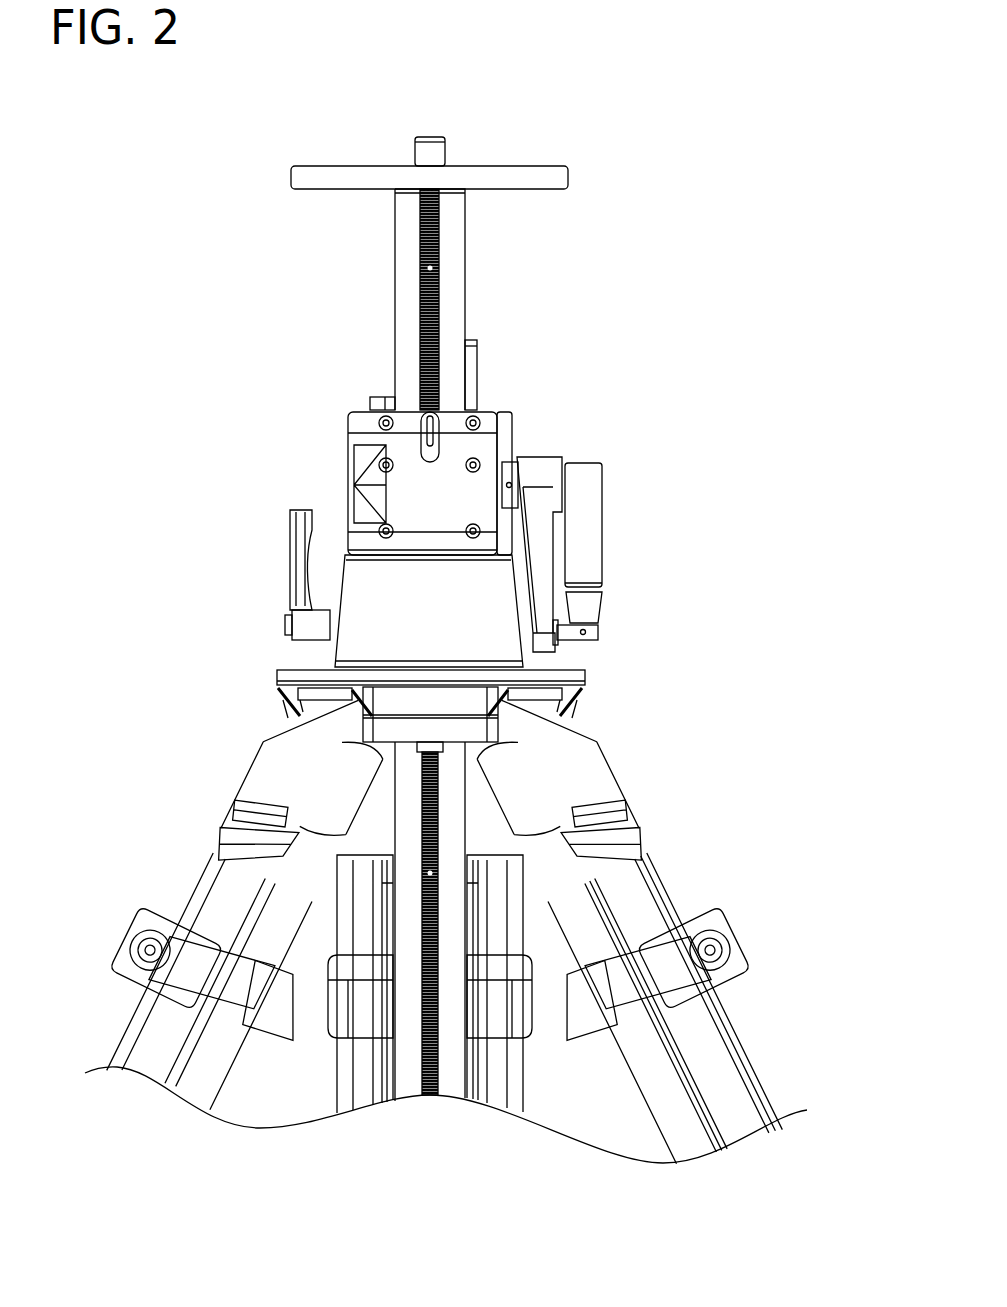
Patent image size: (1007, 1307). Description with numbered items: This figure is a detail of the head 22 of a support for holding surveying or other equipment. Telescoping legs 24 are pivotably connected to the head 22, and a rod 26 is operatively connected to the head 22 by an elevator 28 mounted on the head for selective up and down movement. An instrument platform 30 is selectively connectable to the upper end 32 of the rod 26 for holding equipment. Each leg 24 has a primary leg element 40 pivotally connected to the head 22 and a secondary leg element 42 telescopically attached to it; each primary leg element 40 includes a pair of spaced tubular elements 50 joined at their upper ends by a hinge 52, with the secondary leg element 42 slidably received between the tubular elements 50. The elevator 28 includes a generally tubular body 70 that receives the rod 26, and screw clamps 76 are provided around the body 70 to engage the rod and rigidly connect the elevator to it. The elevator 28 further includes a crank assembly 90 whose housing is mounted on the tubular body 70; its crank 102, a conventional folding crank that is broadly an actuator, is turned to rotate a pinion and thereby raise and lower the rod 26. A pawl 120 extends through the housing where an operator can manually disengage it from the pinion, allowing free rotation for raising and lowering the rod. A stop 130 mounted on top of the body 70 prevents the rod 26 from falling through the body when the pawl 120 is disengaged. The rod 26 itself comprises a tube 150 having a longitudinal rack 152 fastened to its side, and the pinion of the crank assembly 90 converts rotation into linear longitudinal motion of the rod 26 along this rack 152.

The head 22 is at (598, 683).
The telescoping legs 24 is at (452, 958).
The rod 26 is at (470, 283).
The elevator 28 is at (517, 430).
The instrument platform 30 is at (542, 158).
The upper end 32 is at (378, 198).
The primary leg element 40 is at (233, 1076).
The secondary leg element 42 is at (120, 1046).
The tubular elements 50 is at (205, 876).
The hinge 52 is at (250, 775).
The tubular body 70 is at (333, 655).
The screw clamps 76 is at (285, 573).
The crank assembly 90 is at (340, 422).
The crank 102 is at (604, 528).
The pawl 120 is at (425, 437).
The stop 130 is at (485, 366).
The tube 150 is at (394, 320).
The rack 152 is at (440, 252).